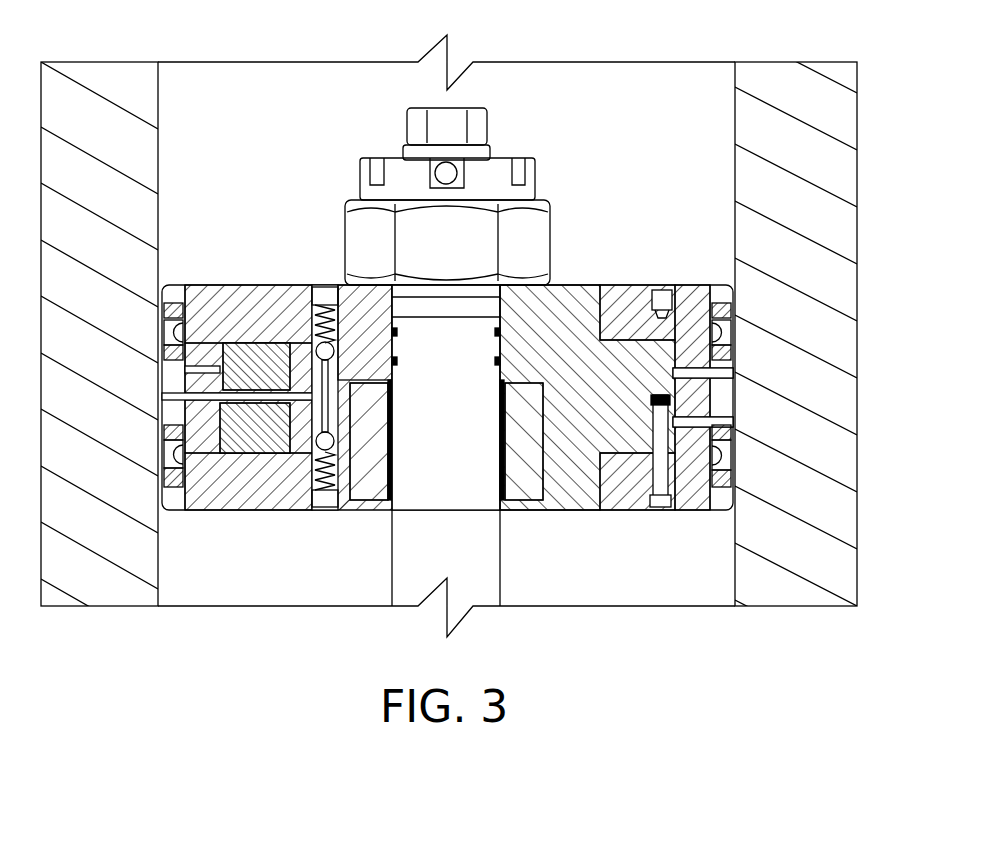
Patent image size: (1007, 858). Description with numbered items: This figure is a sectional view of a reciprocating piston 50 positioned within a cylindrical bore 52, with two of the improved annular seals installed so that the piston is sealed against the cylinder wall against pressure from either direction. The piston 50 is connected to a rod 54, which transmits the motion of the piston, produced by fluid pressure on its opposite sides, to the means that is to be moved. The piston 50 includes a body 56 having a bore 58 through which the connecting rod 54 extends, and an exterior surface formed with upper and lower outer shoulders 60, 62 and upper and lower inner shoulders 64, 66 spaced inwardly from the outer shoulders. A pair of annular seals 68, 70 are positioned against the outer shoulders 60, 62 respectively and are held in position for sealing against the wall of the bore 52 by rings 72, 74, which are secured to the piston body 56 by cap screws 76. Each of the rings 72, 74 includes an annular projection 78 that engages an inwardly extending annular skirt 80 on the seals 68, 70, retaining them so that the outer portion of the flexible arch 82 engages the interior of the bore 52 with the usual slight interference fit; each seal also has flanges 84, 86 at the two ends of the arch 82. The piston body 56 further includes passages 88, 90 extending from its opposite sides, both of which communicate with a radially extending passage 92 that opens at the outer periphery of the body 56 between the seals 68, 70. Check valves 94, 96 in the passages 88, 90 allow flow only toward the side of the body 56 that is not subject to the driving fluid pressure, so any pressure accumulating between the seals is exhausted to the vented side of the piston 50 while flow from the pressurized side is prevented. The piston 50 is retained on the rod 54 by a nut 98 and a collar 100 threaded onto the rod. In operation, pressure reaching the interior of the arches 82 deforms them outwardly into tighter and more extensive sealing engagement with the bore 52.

The piston 50 is at (560, 247).
The cylindrical bore 52 is at (160, 88).
The rod 54 is at (500, 570).
The body 56 is at (552, 285).
The bore 58 is at (498, 288).
The upper outer shoulder 60 is at (175, 396).
The lower outer shoulder 62 is at (165, 430).
The upper inner shoulder 64 is at (247, 320).
The lower inner shoulder 66 is at (255, 418).
The annular seal 68 is at (165, 318).
The annular seal 70 is at (165, 462).
The ring 72 is at (247, 330).
The ring 74 is at (275, 507).
The cap screws 76 is at (660, 287).
The annular projection 78 is at (190, 370).
The annular skirt 80 is at (678, 290).
The arch 82 is at (722, 337).
The flange 84 is at (722, 306).
The flange 86 is at (722, 368).
The passage 88 is at (272, 330).
The passage 90 is at (283, 507).
The radially extending passage 92 is at (225, 507).
The check valve 94 is at (326, 312).
The check valve 96 is at (325, 507).
The nut 98 is at (537, 203).
The collar 100 is at (372, 502).